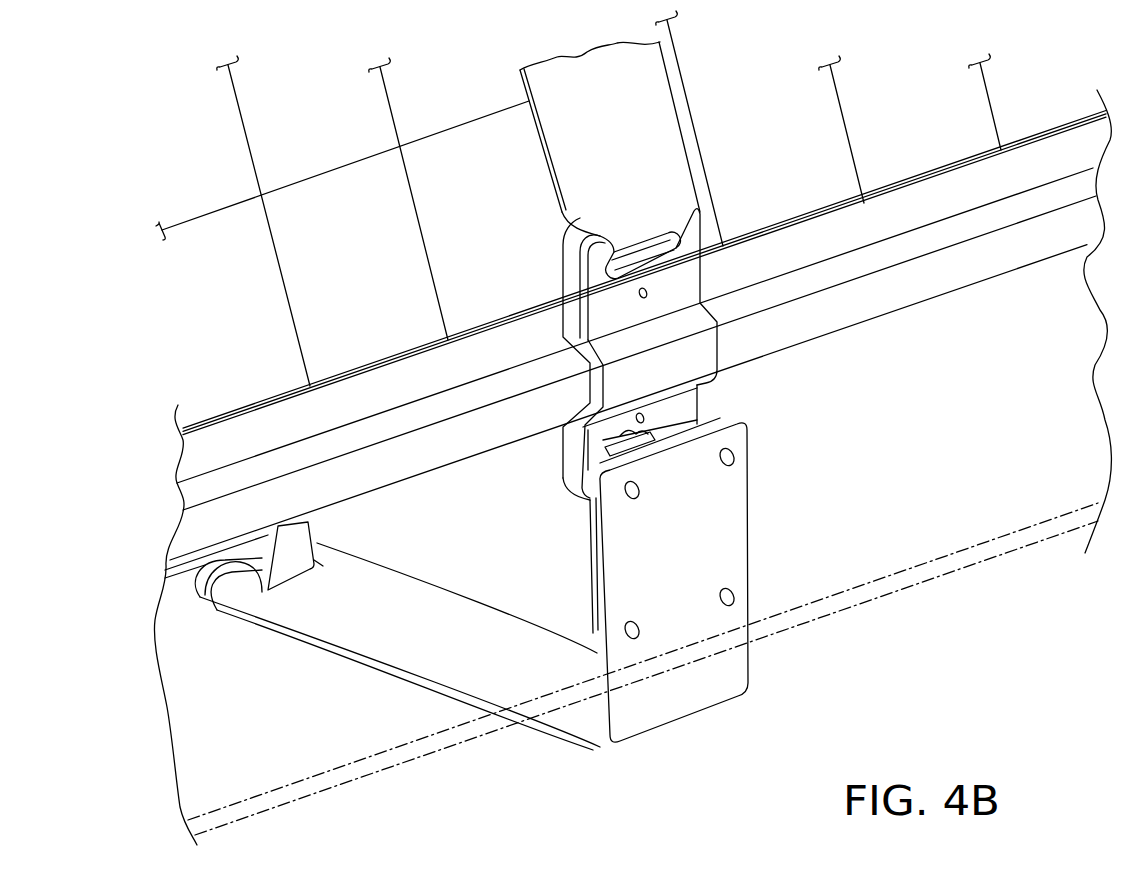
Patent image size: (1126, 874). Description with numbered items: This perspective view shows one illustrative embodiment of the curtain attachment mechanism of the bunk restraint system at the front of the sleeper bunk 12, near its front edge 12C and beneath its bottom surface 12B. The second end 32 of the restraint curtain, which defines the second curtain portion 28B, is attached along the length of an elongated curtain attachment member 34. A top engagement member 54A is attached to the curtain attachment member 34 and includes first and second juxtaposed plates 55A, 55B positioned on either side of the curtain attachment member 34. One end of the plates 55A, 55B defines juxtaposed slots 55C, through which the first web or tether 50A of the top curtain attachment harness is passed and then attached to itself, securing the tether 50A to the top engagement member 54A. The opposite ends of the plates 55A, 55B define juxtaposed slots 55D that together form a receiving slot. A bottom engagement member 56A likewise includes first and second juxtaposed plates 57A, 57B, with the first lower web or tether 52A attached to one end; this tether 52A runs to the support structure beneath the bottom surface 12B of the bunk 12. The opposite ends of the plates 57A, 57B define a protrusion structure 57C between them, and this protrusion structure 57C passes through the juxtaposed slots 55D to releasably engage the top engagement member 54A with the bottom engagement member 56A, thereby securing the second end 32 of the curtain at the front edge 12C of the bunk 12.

The sleeper bunk 12 is at (632, 467).
The bottom surface 12B is at (783, 633).
The front edge 12C is at (936, 525).
The second curtain portion 28B is at (277, 258).
The second end of the curtain 32 is at (392, 357).
The curtain attachment member 34 is at (962, 270).
The first web or tether 50A is at (660, 105).
The first lower web or tether 52A is at (305, 534).
The top engagement member 54A is at (658, 333).
The first plate 55A is at (712, 318).
The second plate 55B is at (562, 264).
The juxtaposed slots 55C is at (640, 258).
The juxtaposed slots 55D is at (648, 420).
The bottom engagement member 56A is at (757, 552).
The first plate 57A is at (682, 718).
The second plate 57B is at (592, 552).
The protrusion structure 57C is at (668, 437).